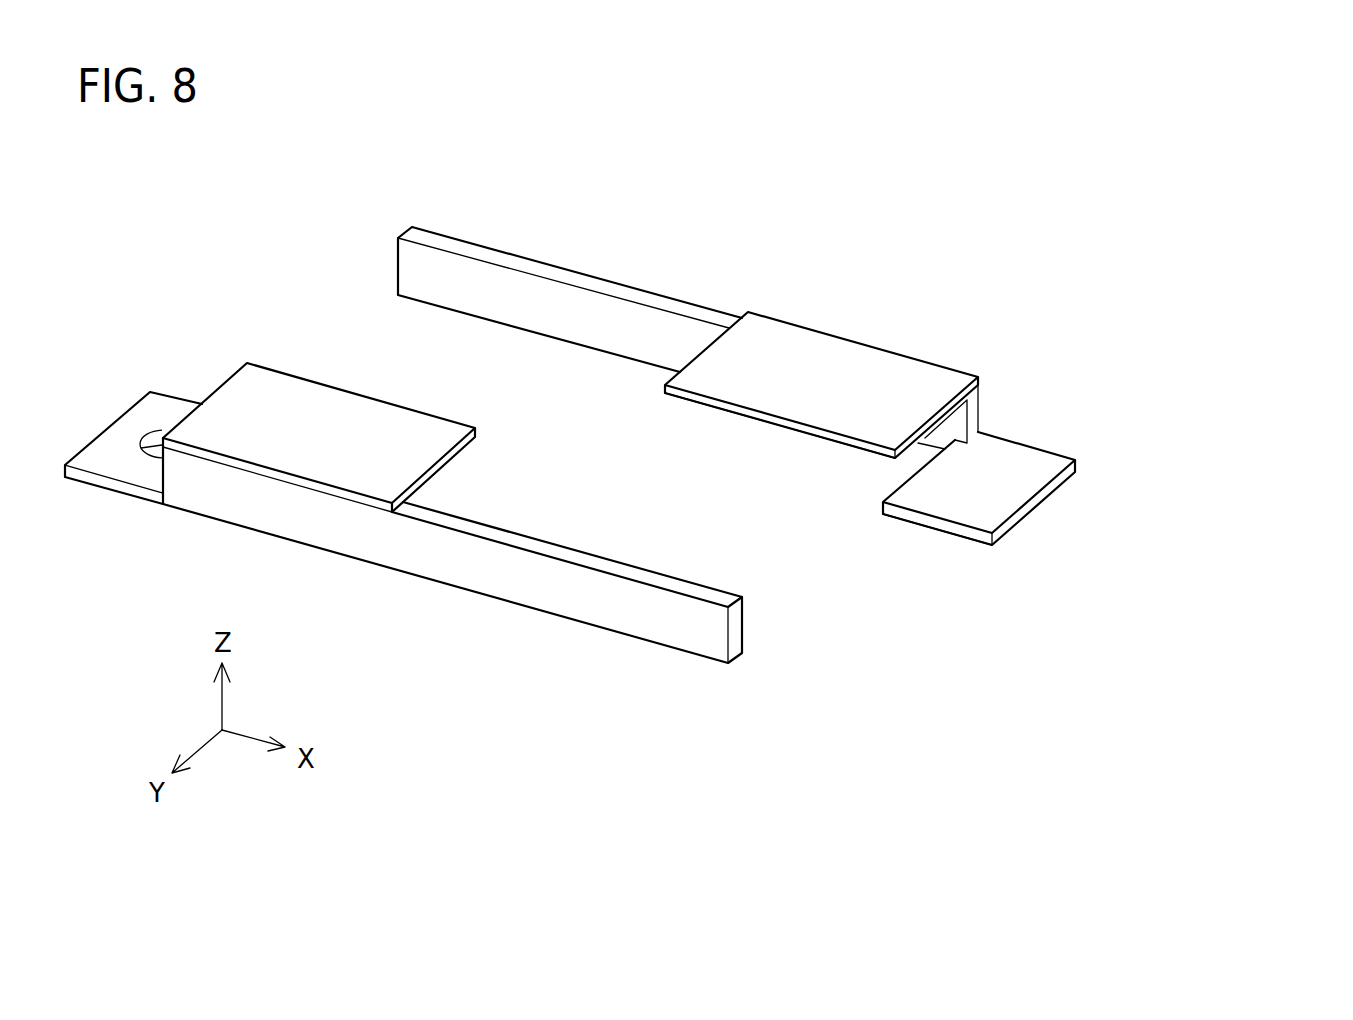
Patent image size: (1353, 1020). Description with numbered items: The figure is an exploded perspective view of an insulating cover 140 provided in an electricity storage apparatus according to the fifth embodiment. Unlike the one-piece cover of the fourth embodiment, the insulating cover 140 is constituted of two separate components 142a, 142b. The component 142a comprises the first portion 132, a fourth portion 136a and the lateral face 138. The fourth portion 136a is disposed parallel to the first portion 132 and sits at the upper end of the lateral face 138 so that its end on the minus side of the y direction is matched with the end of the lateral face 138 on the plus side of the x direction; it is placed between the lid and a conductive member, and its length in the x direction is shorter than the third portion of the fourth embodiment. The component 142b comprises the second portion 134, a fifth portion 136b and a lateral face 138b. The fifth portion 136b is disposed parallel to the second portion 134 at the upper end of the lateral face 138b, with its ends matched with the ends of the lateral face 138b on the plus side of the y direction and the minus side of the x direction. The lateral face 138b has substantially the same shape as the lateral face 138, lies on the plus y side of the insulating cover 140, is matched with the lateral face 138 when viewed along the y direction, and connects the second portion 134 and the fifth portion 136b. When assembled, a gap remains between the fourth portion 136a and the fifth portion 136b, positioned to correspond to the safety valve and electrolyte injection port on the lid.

The first portion 132 is at (1025, 470).
The second portion 134 is at (105, 450).
The fourth portion 136a is at (847, 362).
The fifth portion 136b is at (377, 423).
The lateral face 138 is at (552, 275).
The lateral face 138b is at (582, 560).
The insulating cover 140 is at (1271, 503).
The component 142a is at (1115, 499).
The component 142b is at (815, 658).